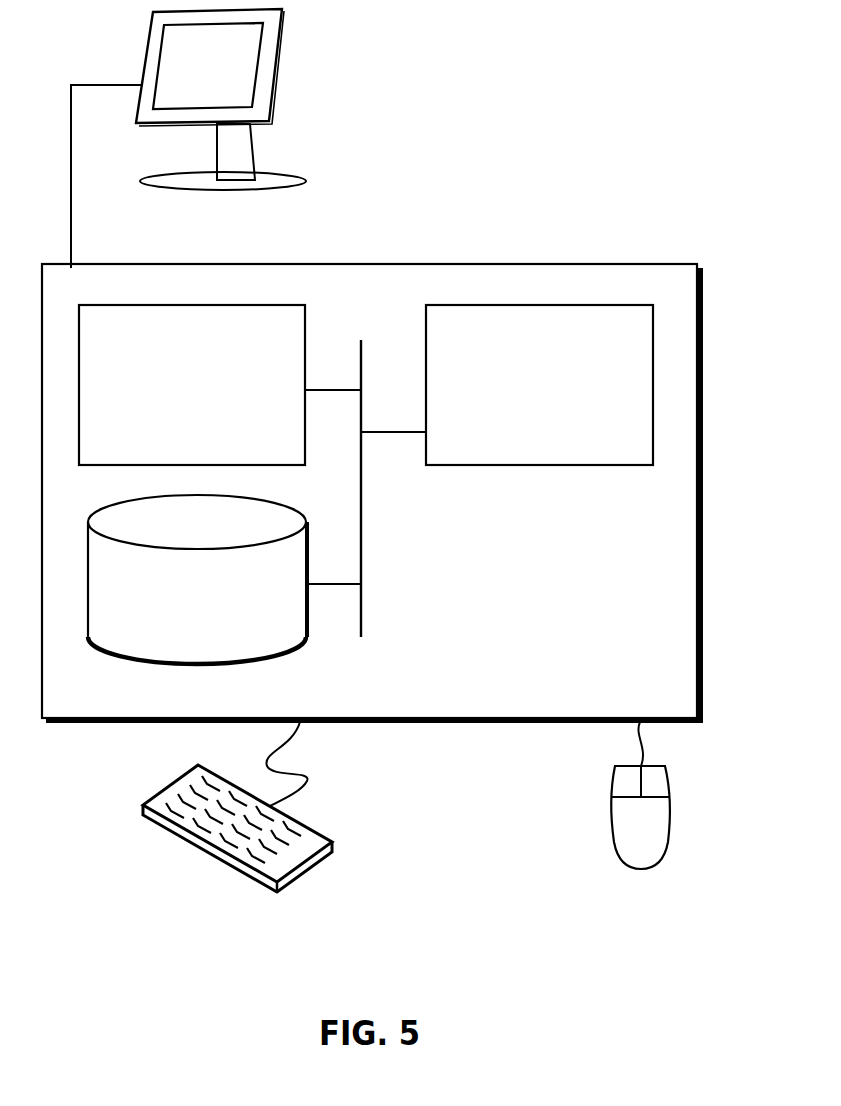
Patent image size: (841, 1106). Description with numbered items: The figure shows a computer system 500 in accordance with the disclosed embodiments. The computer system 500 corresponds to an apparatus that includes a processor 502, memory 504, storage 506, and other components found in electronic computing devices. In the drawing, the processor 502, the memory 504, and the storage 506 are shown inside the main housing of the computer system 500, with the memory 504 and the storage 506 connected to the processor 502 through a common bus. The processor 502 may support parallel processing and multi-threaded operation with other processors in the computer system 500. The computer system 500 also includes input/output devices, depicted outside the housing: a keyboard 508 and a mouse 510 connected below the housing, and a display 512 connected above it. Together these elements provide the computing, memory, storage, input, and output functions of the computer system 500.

The computer system 500 is at (416, 242).
The processor 502 is at (522, 398).
The memory 504 is at (172, 398).
The storage 506 is at (177, 608).
The keyboard 508 is at (162, 827).
The mouse 510 is at (621, 840).
The display 512 is at (188, 138).